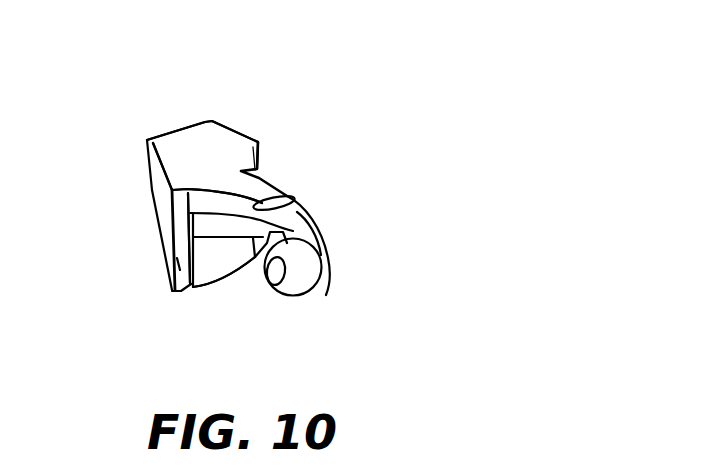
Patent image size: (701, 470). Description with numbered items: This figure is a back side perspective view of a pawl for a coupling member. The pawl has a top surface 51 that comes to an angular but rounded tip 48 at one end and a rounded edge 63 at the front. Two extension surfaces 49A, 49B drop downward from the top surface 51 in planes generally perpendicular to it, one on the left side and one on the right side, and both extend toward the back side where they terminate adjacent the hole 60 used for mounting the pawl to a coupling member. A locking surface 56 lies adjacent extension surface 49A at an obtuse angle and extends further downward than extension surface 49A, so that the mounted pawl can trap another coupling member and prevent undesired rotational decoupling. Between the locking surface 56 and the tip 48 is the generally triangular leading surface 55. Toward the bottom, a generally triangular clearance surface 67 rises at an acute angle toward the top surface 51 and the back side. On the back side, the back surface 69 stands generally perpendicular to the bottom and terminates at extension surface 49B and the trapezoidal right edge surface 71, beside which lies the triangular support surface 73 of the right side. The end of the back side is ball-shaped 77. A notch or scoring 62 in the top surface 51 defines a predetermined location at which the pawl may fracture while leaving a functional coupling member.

The tip 48 is at (209, 112).
The extension surface 49A is at (297, 189).
The extension surface 49B is at (223, 237).
The top surface 51 is at (217, 157).
The leading surface 55 is at (221, 113).
The locking surface 56 is at (259, 163).
The hole 60 is at (266, 287).
The notch or scoring 62 is at (298, 200).
The rounded edge 63 is at (170, 124).
The clearance surface 67 is at (184, 300).
The back surface 69 is at (236, 268).
The right edge surface 71 is at (171, 273).
The support surface 73 is at (171, 213).
The ball-shaped end 77 is at (380, 293).